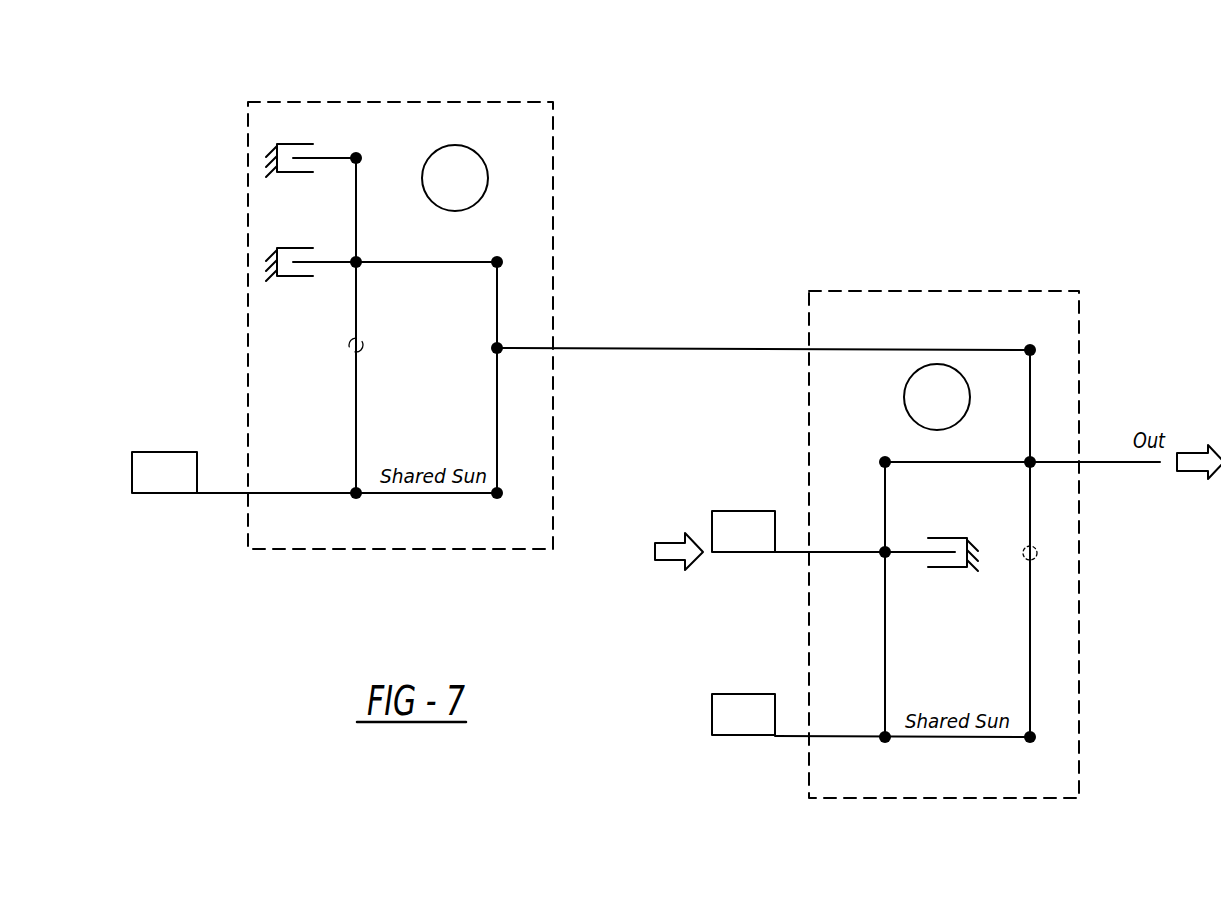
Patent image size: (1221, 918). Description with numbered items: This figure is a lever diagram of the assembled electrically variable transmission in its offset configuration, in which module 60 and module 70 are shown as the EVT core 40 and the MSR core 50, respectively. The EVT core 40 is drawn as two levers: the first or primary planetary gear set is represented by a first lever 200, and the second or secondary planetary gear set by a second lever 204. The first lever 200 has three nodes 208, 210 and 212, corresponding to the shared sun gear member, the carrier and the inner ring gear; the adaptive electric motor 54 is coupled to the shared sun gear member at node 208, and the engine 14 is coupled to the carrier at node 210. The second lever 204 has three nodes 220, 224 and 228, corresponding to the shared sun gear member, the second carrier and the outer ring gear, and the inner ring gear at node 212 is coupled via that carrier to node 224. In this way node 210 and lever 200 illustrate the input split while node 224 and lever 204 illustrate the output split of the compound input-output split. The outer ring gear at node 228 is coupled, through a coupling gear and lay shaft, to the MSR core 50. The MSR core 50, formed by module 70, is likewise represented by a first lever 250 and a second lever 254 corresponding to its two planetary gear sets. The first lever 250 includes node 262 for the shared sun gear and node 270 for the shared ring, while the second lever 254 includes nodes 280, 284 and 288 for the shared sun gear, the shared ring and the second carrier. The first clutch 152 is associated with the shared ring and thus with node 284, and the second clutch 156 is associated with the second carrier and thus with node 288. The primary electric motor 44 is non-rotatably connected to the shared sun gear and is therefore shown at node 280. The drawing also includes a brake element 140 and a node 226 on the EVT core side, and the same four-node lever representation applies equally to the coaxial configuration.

The module 70 is at (566, 95).
The MSR core 50 is at (553, 160).
The module 60 is at (1006, 243).
The EVT core 40 is at (1080, 310).
The engine 14 is at (737, 511).
The primary electric motor 44 is at (163, 452).
The adaptive electric motor 54 is at (712, 712).
The brake 140 is at (922, 555).
The first clutch 152 is at (333, 262).
The second clutch 156 is at (333, 158).
The first lever 200 is at (885, 597).
The second lever 204 is at (1030, 645).
The node 208 is at (887, 740).
The node 210 is at (888, 550).
The node 212 is at (884, 461).
The node 220 is at (1032, 740).
The node 224 is at (1032, 461).
The interconnecting node 226 is at (498, 348).
The node 228 is at (1030, 350).
The first lever 250 is at (500, 404).
The second lever 254 is at (356, 426).
The node 262 is at (497, 495).
The node 270 is at (500, 260).
The node 280 is at (356, 495).
The node 284 is at (358, 260).
The node 288 is at (357, 158).